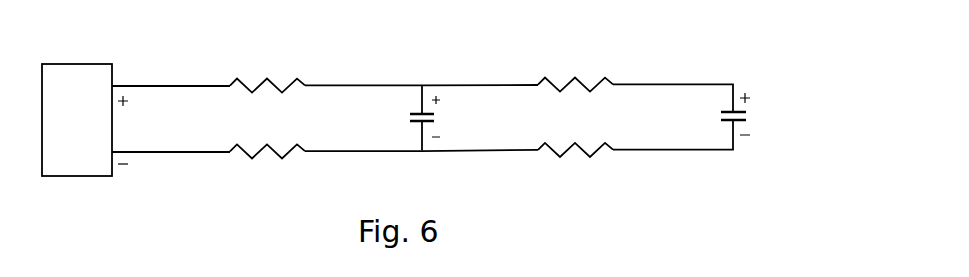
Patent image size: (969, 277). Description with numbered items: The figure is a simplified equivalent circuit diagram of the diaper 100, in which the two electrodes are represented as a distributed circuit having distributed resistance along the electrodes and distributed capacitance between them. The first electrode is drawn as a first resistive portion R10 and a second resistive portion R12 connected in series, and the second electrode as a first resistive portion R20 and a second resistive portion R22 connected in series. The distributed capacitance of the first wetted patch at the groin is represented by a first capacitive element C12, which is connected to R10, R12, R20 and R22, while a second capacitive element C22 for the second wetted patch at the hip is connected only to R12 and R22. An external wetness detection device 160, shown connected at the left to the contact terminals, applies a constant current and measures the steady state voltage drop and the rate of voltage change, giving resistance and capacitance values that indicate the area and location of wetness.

The diaper 100 is at (653, 276).
The external wetness detection device 160 is at (80, 150).
The first resistive portion R10 is at (267, 69).
The first resistive portion R20 is at (267, 170).
The second resistive portion R12 is at (575, 68).
The second resistive portion R22 is at (575, 167).
The first capacitive element C12 is at (451, 117).
The second capacitive element C22 is at (758, 114).